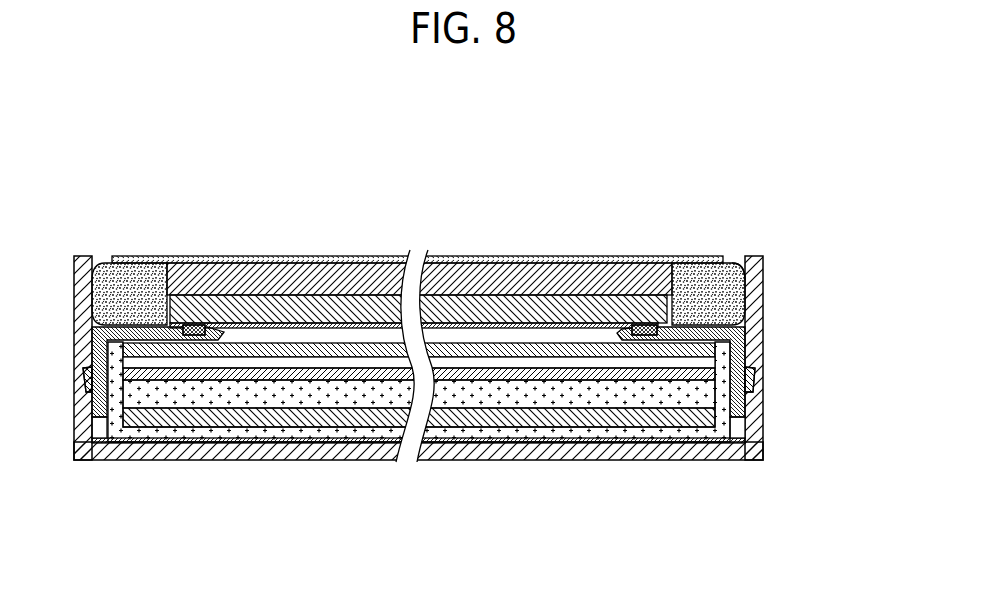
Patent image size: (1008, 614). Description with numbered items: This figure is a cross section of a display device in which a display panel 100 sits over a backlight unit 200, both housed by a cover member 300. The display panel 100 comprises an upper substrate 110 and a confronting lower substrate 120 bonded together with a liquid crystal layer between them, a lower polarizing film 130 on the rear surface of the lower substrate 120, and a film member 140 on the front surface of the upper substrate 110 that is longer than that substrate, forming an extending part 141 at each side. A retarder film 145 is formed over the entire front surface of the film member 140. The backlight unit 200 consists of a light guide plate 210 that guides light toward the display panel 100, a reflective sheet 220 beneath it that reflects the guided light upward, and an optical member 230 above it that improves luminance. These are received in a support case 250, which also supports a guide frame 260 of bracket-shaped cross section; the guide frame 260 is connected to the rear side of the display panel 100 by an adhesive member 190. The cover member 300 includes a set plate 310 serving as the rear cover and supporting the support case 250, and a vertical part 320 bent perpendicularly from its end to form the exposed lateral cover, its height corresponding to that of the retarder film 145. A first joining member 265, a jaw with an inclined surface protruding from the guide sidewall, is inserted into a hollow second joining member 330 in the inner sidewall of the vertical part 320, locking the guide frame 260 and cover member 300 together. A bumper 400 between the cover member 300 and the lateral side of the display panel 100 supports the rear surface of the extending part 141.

The display panel 100 is at (417, 225).
The upper substrate 110 is at (473, 287).
The lower substrate 120 is at (492, 308).
The lower polarizing film 130 is at (414, 273).
The film member 140 is at (457, 257).
The extending part 141 is at (112, 260).
The retarder film 145 is at (678, 256).
The adhesive member 190 is at (653, 327).
The backlight unit 200 is at (419, 456).
The light guide plate 210 is at (245, 395).
The reflective sheet 220 is at (274, 407).
The optical member 230 is at (222, 373).
The support case 250 is at (490, 447).
The guide frame 260 is at (87, 393).
The first joining member 265 is at (748, 363).
The cover member 300 is at (471, 379).
The set plate 310 is at (713, 450).
The vertical part 320 is at (758, 425).
The second joining member 330 is at (449, 397).
The bumper 400 is at (728, 265).